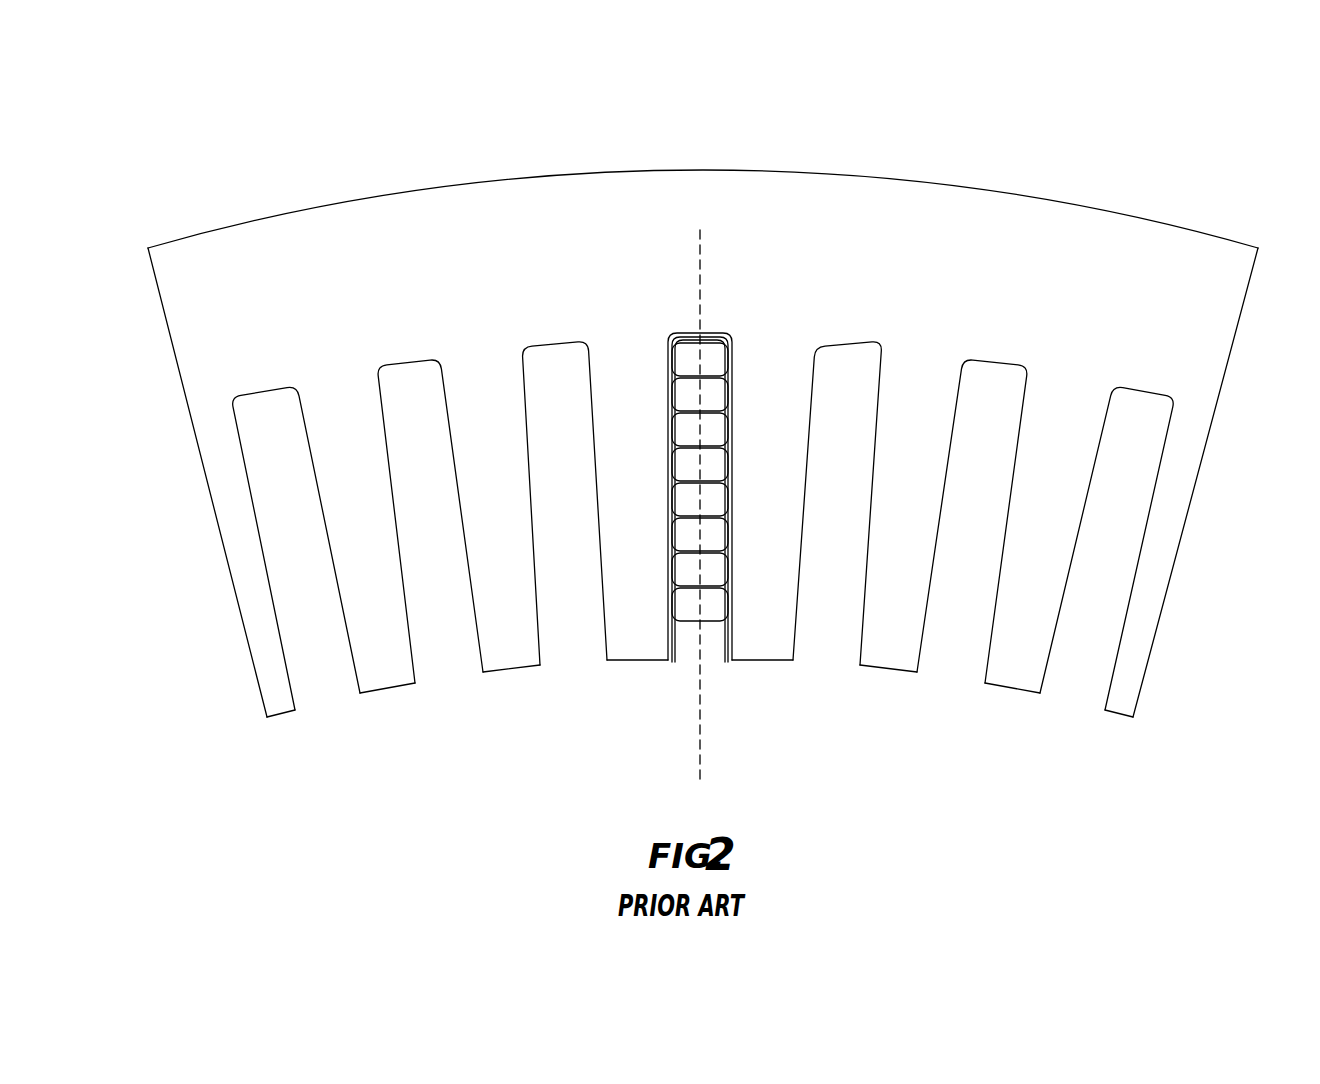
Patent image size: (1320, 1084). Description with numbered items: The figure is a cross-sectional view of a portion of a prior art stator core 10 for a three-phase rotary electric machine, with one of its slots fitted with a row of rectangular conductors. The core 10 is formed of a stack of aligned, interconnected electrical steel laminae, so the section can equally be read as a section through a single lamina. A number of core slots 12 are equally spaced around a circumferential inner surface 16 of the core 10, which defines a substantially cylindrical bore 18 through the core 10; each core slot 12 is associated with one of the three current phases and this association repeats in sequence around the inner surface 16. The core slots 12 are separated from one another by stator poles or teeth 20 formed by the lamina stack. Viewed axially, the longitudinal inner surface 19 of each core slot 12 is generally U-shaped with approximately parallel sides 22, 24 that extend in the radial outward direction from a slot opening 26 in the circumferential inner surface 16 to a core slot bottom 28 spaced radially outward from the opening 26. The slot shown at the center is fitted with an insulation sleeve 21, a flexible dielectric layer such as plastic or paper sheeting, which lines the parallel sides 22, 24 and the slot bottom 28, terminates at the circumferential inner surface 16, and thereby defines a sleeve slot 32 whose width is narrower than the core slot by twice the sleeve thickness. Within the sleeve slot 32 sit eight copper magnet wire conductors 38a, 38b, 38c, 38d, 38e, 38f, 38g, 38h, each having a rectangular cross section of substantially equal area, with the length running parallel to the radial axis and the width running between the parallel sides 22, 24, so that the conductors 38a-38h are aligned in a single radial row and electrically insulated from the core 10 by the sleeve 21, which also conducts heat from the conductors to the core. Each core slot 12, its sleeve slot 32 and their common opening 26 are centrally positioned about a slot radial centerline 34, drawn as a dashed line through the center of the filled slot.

The stator core 10 is at (1154, 150).
The core slot 12 is at (395, 390).
The circumferential inner surface 16 is at (403, 692).
The cylindrical bore 18 is at (918, 803).
The inner surface of core slot 19 is at (290, 433).
The tooth 20 is at (907, 420).
The insulation sleeve 21 is at (720, 645).
The core slot side 22 is at (413, 653).
The core slot side 24 is at (472, 598).
The slot opening 26 is at (455, 705).
The core slot bottom 28 is at (440, 358).
The sleeve slot 32 is at (677, 655).
The slot radial centerline 34 is at (701, 262).
The rectangular conductor 38a is at (700, 605).
The rectangular conductor 38b is at (700, 570).
The rectangular conductor 38c is at (700, 535).
The rectangular conductor 38d is at (700, 500).
The rectangular conductor 38e is at (700, 465).
The rectangular conductor 38f is at (700, 430).
The rectangular conductor 38g is at (700, 395).
The rectangular conductor 38h is at (700, 360).